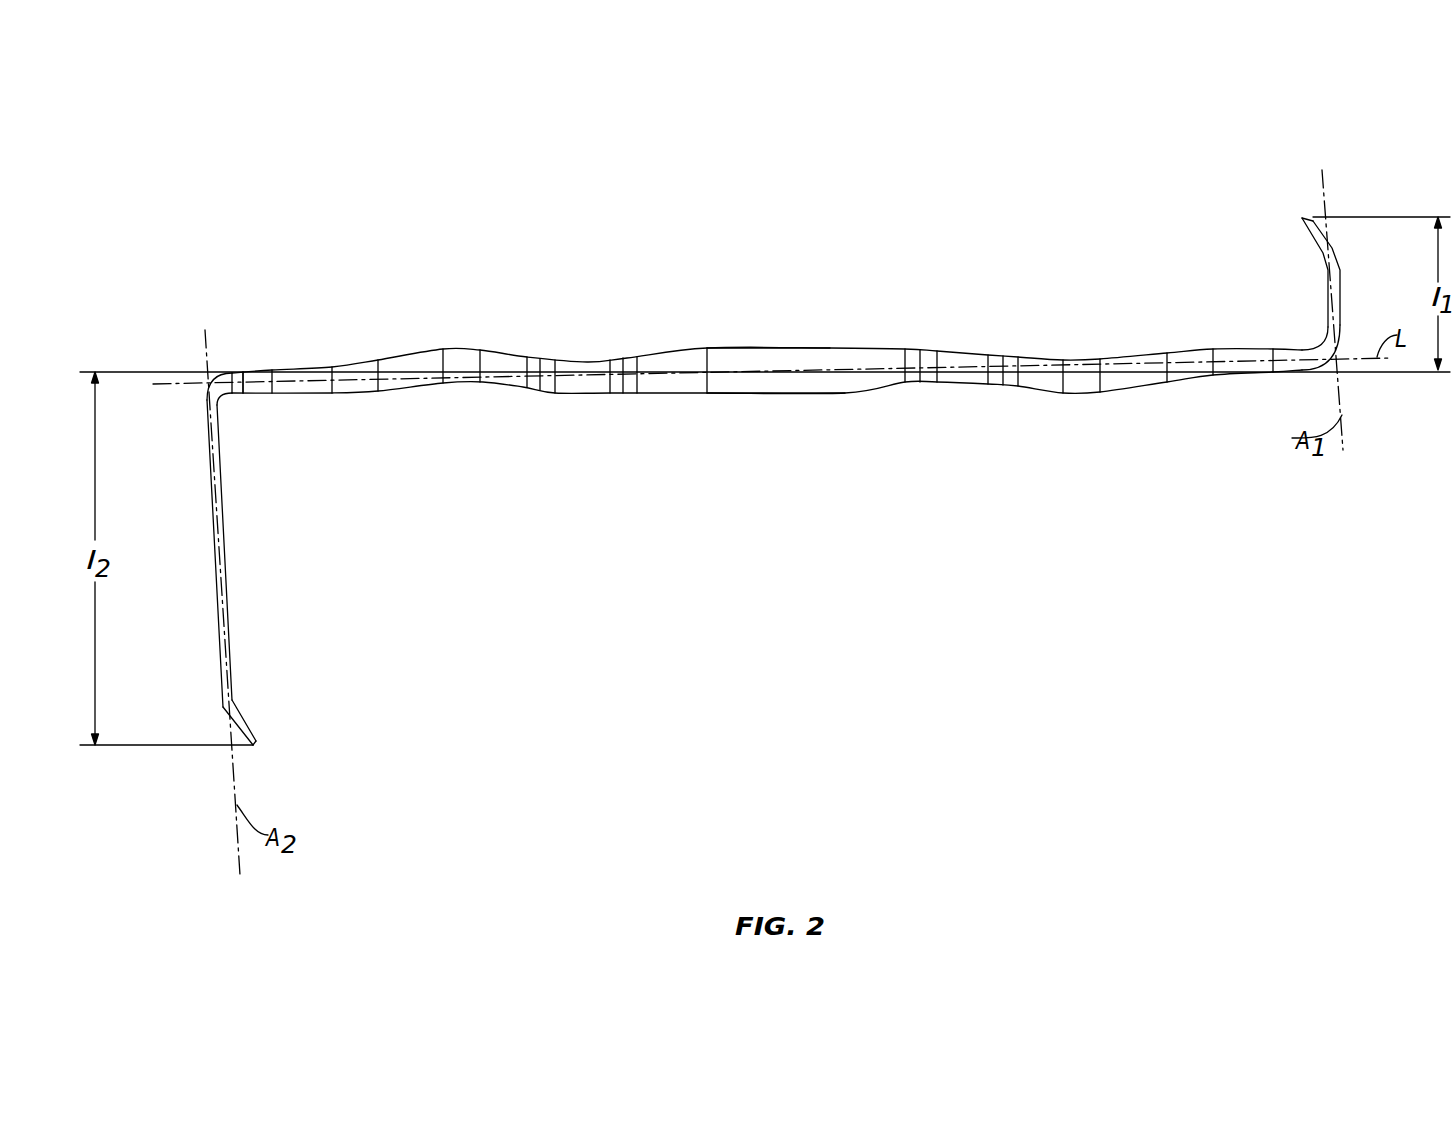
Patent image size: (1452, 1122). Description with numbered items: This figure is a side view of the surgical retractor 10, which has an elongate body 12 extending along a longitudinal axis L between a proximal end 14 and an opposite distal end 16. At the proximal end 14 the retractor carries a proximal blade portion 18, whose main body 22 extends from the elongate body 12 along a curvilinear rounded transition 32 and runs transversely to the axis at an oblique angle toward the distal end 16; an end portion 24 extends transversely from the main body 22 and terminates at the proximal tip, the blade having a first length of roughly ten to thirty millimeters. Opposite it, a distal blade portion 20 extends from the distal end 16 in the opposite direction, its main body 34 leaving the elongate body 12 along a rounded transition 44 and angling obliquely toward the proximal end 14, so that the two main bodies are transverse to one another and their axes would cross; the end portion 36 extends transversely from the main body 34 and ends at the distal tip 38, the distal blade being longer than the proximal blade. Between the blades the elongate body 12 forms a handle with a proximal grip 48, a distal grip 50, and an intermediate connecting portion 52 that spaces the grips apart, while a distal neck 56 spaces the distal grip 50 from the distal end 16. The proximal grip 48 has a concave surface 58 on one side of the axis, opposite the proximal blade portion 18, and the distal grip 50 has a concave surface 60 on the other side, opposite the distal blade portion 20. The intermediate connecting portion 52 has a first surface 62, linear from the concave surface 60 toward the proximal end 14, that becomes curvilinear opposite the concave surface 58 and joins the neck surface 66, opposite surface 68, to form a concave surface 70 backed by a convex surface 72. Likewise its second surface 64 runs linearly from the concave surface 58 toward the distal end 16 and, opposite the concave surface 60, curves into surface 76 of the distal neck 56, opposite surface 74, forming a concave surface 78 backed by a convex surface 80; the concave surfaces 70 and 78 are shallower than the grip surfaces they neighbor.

The surgical retractor 10 is at (1357, 113).
The elongate body 12 is at (723, 395).
The proximal end 14 is at (1343, 276).
The distal end 16 is at (198, 398).
The proximal blade portion 18 is at (1343, 327).
The distal blade portion 20 is at (203, 582).
The main body 22 is at (1327, 307).
The end portion 24 is at (1308, 215).
The rounded transition 32 is at (1323, 347).
The main body 34 is at (225, 535).
The end portion 36 is at (243, 723).
The distal tip 38 is at (253, 745).
The rounded transition 44 is at (248, 397).
The proximal grip 48 is at (957, 355).
The distal grip 50 is at (580, 385).
The intermediate connecting portion 52 is at (792, 342).
The distal neck 56 is at (350, 367).
The concave surface 58 is at (960, 380).
The concave surface 60 is at (587, 362).
The first surface 62 is at (740, 348).
The second surface 64 is at (767, 395).
The surface 66 is at (1193, 350).
The surface 68 is at (1200, 377).
The concave surface 70 is at (1080, 358).
The convex surface 72 is at (1080, 393).
The surface 74 is at (300, 368).
The surface 76 is at (328, 397).
The concave surface 78 is at (428, 387).
The convex surface 80 is at (462, 349).